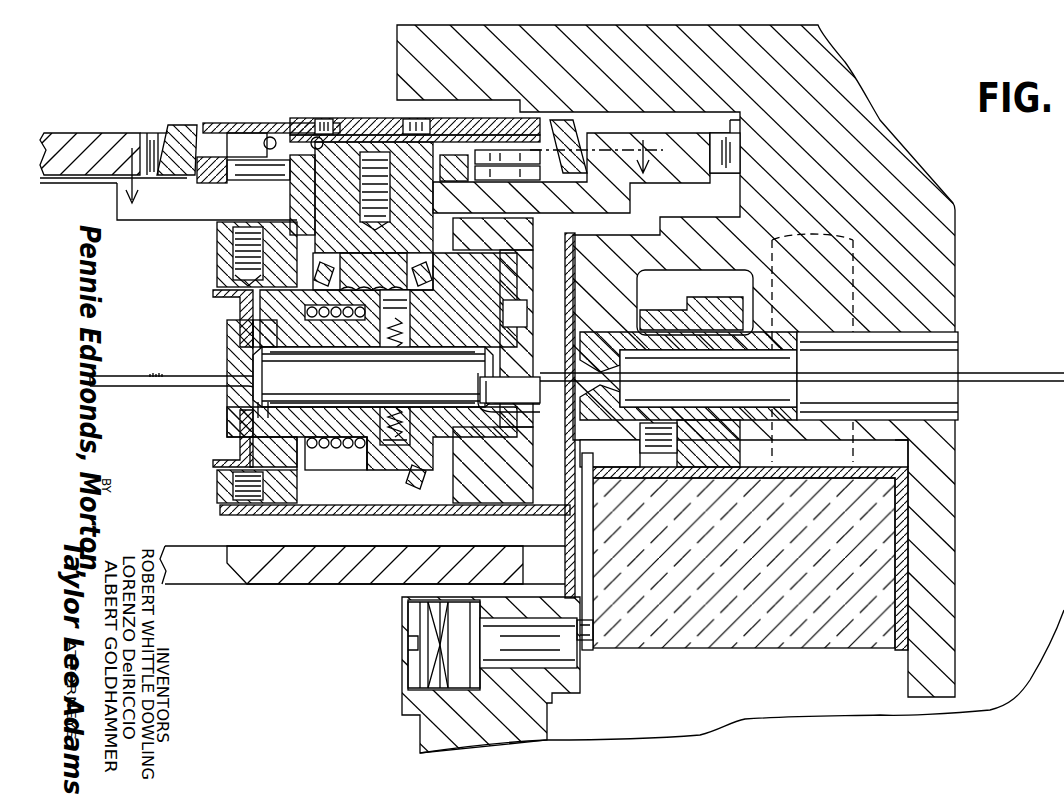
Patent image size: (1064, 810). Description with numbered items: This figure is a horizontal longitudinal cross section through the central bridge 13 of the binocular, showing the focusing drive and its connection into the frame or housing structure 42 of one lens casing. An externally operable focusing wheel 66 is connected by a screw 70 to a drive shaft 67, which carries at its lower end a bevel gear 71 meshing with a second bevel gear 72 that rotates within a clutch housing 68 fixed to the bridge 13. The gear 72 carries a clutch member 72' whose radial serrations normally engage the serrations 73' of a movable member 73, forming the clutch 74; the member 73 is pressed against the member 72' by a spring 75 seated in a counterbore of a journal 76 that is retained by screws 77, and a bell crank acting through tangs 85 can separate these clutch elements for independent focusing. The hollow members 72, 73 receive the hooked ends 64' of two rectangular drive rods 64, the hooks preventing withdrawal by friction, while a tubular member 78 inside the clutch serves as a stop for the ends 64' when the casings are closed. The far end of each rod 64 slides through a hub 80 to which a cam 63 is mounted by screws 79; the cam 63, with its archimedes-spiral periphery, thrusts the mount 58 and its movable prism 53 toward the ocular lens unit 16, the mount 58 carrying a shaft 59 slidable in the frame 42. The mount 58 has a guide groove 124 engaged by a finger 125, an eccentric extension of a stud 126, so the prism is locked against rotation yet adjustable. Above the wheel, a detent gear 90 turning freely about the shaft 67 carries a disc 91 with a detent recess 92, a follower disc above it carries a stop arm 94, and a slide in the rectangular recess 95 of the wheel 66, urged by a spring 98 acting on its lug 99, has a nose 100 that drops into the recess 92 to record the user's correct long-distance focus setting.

The central bridge 13 is at (318, 588).
The ocular lens unit 16 is at (387, 154).
The frame or housing structure 42 is at (953, 268).
The movable prism 53 is at (885, 568).
The mount 58 is at (898, 470).
The shaft 59 is at (855, 292).
The cam 63 is at (690, 300).
The rectangular-shaped drive rod 64 is at (577, 370).
The hooked end of drive rod 64' is at (371, 395).
The focusing wheel 66 is at (192, 124).
The drive shaft 67 is at (390, 260).
The clutch housing 68 is at (530, 242).
The screw 70 is at (350, 120).
The bevel gear 71 is at (322, 274).
The second bevel gear 72 is at (397, 300).
The clutch member 72' is at (403, 480).
The movable member of the clutch 73 is at (373, 377).
The serrations 73' is at (372, 376).
The clutch 74 is at (373, 472).
The spring 75 is at (350, 450).
The journal 76 is at (305, 460).
The screws 77 is at (240, 252).
The tubular member 78 is at (275, 372).
The screws 79 is at (640, 448).
The hub 80 is at (793, 345).
The tangs 85 is at (232, 332).
The detent gear 90 is at (245, 176).
The disc 91 is at (288, 180).
The detent or recess 92 is at (468, 180).
The stop arm 94 is at (222, 176).
The rectangular recess 95 is at (510, 134).
The spring 98 is at (270, 137).
The integral lug 99 is at (255, 132).
The downturned lug or nose 100 is at (540, 172).
The guide groove 124 is at (590, 645).
The finger 125 is at (596, 638).
The stud 126 is at (547, 655).